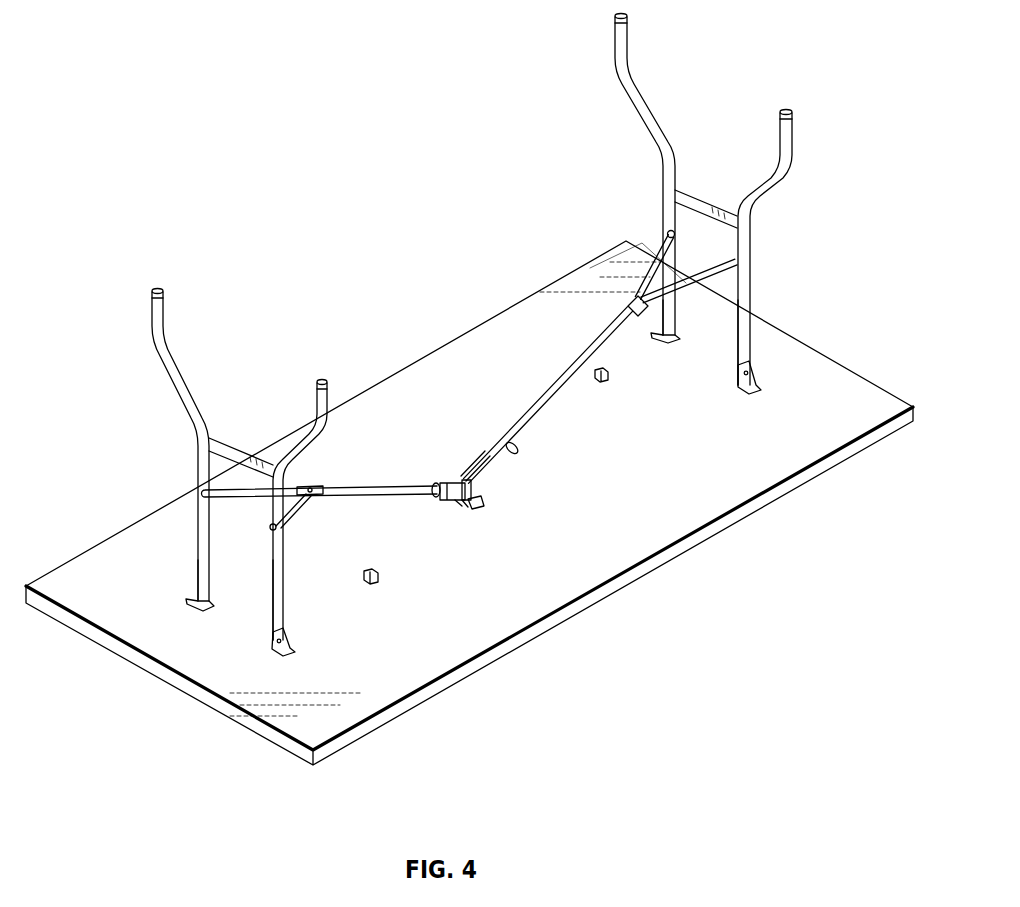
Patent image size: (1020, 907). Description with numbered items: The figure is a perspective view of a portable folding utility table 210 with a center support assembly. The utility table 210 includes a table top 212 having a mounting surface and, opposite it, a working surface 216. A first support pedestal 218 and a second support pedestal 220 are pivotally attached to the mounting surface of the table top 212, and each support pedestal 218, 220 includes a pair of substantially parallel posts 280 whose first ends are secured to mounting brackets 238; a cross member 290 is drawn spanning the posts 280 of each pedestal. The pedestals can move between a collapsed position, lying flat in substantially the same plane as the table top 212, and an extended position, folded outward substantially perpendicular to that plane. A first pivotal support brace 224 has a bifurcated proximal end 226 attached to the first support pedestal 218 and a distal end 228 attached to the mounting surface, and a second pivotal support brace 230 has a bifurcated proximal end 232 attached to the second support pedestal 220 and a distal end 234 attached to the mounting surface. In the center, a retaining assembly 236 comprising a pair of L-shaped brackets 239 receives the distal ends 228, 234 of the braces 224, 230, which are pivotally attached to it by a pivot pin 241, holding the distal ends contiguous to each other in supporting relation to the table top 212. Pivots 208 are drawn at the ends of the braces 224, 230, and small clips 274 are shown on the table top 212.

The pivot 208 is at (436, 486).
The utility table 210 is at (211, 426).
The table top 212 is at (748, 515).
The working surface 216 is at (585, 615).
The first support pedestal 218 is at (166, 387).
The second support pedestal 220 is at (783, 187).
The first pivotal support brace 224 is at (344, 478).
The bifurcated proximal end 226 is at (296, 512).
The distal end 228 is at (450, 484).
The second pivotal support brace 230 is at (564, 376).
The bifurcated proximal end 232 is at (637, 295).
The distal end 234 is at (480, 472).
The retaining assembly 236 is at (480, 504).
The mounting bracket 238 is at (268, 653).
The L-shaped bracket 239 is at (463, 500).
The pivot pin 241 is at (477, 490).
The clip 274 is at (372, 583).
The post 280 is at (240, 563).
The cross member 290 is at (226, 448).